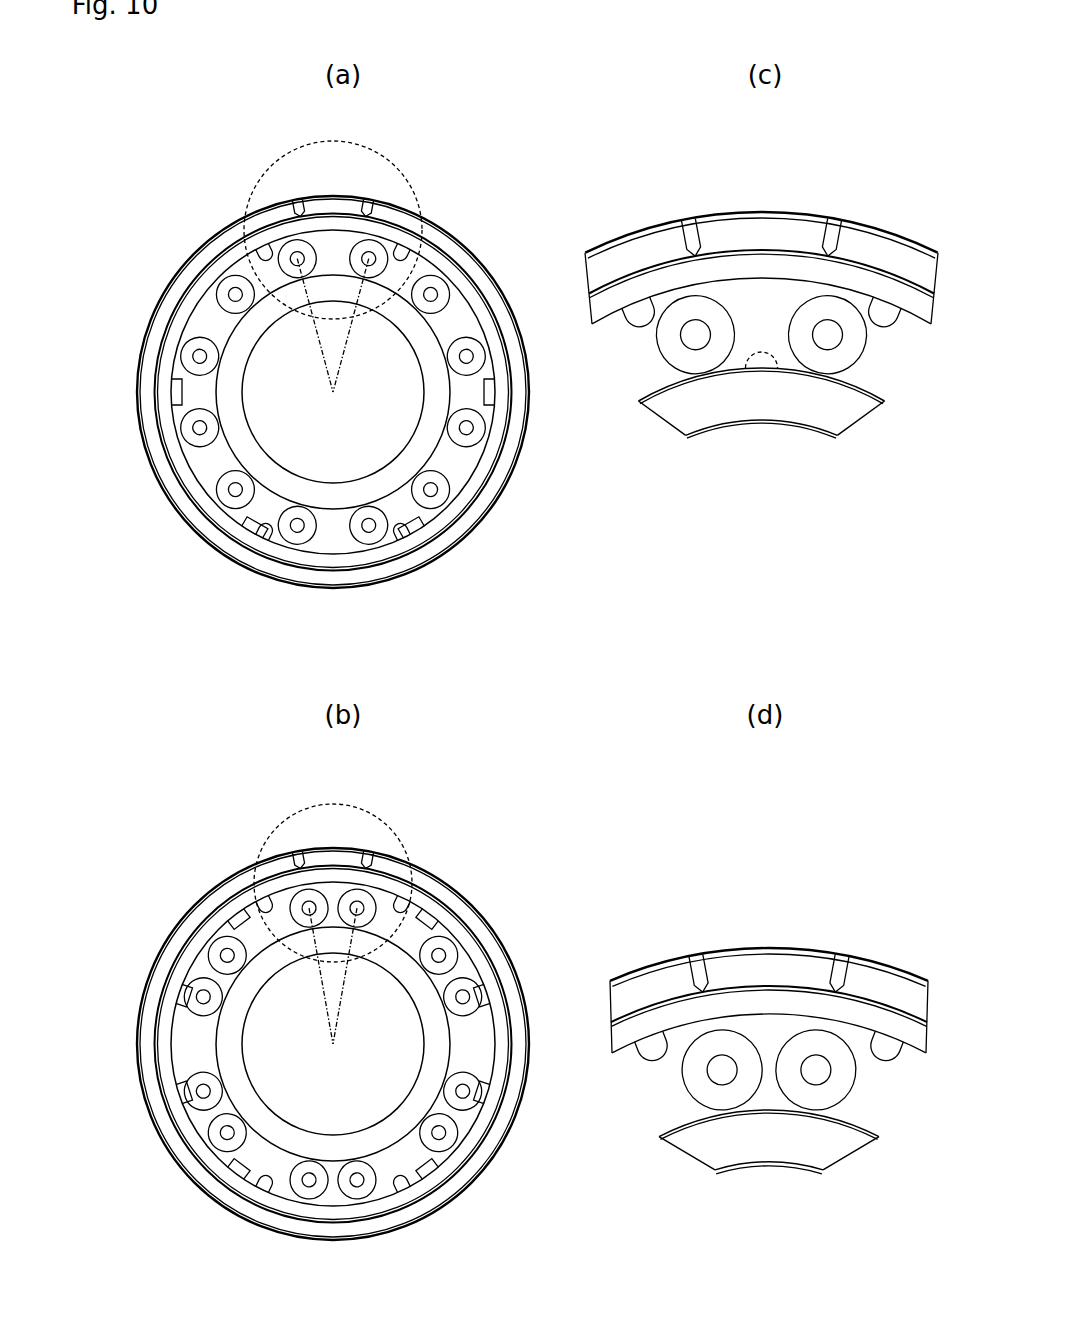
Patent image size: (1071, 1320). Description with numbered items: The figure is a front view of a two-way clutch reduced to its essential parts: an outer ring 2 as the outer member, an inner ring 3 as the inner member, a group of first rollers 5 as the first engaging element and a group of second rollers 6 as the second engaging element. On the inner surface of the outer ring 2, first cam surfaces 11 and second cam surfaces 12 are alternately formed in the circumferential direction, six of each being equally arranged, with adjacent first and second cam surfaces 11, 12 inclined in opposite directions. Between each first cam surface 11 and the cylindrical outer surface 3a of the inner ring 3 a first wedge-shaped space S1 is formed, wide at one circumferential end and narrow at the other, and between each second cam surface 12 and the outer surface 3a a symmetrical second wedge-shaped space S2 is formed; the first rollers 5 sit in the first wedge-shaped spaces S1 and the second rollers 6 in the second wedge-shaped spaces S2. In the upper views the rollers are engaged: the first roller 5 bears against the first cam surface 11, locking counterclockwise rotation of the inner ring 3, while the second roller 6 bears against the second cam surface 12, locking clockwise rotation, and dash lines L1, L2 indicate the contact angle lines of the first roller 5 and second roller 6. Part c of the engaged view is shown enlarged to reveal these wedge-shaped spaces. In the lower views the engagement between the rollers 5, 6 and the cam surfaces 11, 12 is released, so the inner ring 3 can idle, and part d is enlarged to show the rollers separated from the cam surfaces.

The outer ring 2 is at (379, 212).
The inner ring 3 is at (550, 751).
The outer surface 3a is at (773, 370).
The first roller 5 is at (312, 250).
The second roller 6 is at (367, 258).
The first cam surface 11 is at (262, 258).
The second cam surface 12 is at (410, 265).
The contact angle line L1 is at (323, 358).
The contact angle line L2 is at (344, 360).
The first wedge-shaped space S1 is at (667, 373).
The second wedge-shaped space S2 is at (867, 373).
The part c is at (372, 150).
The part d is at (373, 808).